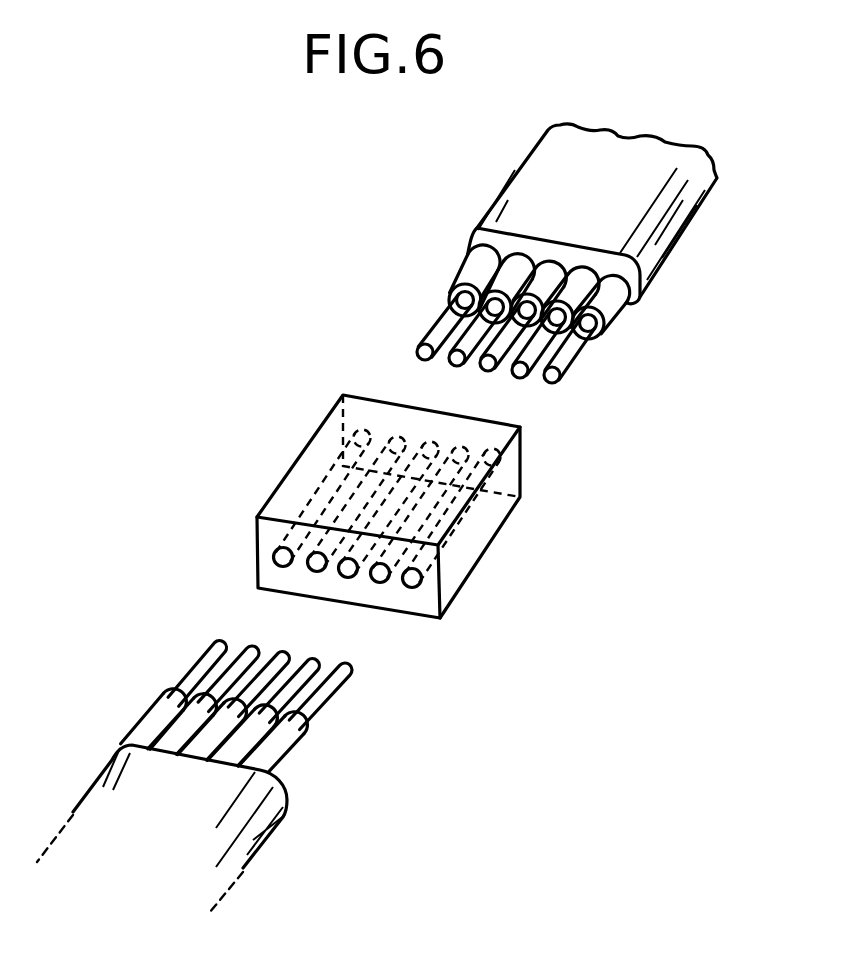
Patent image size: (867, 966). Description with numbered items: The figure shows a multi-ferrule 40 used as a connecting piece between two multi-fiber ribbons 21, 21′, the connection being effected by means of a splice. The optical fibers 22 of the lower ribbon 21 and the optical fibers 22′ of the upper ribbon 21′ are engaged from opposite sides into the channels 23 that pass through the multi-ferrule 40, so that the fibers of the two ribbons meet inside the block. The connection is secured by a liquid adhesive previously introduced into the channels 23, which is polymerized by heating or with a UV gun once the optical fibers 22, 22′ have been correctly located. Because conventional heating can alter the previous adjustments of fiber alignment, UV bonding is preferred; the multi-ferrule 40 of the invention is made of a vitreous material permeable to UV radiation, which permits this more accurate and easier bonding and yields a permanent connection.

The multi-fiber ribbon 21′ is at (540, 184).
The optical fibers 22′ is at (438, 330).
The multi-ferrule 40 is at (490, 543).
The channels 23 is at (408, 584).
The optical fibers 22 is at (330, 697).
The multi-fiber ribbon 21 is at (247, 823).